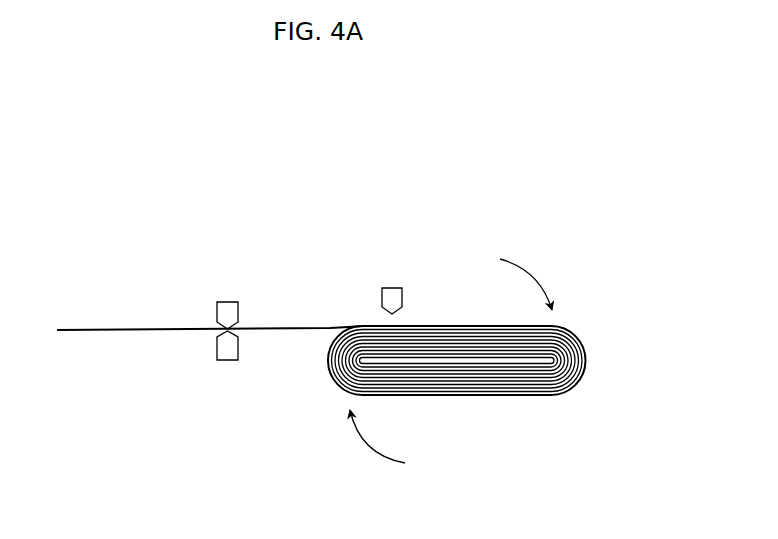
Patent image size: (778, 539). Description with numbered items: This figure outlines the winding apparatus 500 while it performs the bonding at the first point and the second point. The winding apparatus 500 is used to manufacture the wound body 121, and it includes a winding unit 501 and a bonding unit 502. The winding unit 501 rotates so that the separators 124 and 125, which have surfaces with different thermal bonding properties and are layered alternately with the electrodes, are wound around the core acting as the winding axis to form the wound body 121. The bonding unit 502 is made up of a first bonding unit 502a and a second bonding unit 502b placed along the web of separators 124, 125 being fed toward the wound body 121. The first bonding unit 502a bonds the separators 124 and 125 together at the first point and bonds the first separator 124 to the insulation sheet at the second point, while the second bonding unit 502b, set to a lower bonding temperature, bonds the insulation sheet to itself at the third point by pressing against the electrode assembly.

The winding apparatus 500 is at (202, 210).
The bonding unit 502 is at (417, 240).
The first bonding unit 502a is at (227, 352).
The second bonding unit 502b is at (226, 301).
The separator 124 is at (210, 361).
The separator 125 is at (183, 332).
The wound body 121 is at (420, 388).
The winding unit 501 is at (475, 362).